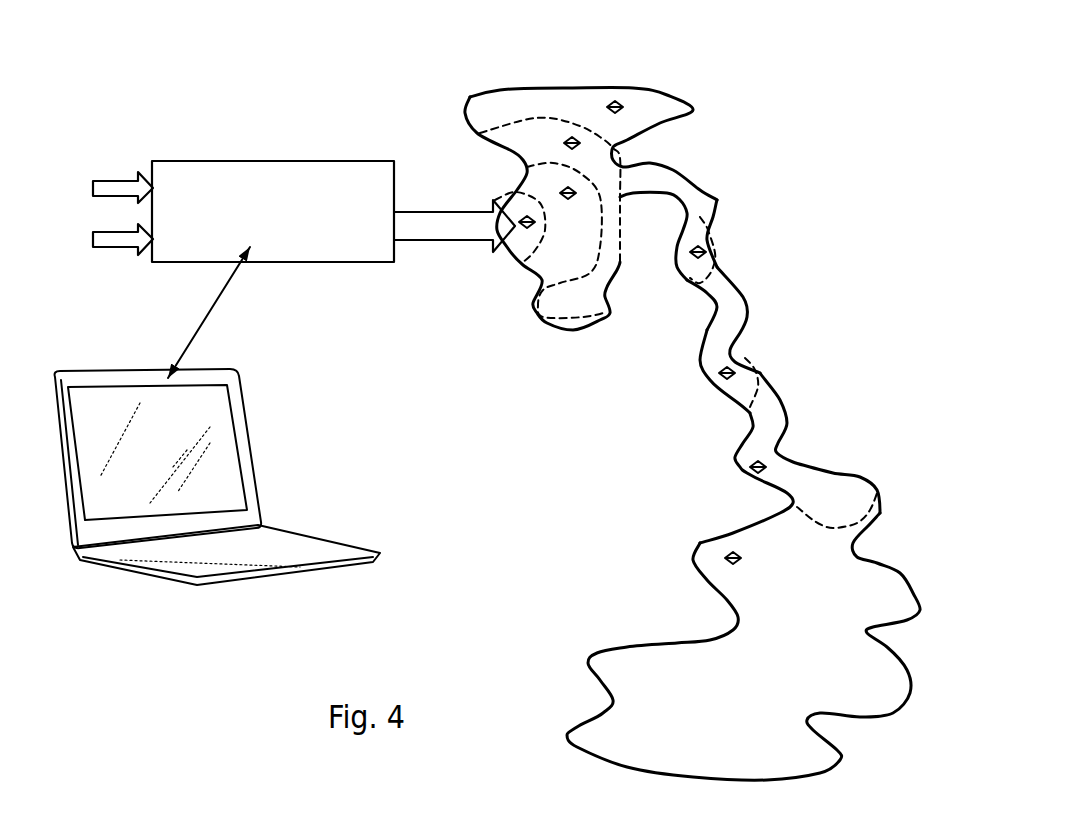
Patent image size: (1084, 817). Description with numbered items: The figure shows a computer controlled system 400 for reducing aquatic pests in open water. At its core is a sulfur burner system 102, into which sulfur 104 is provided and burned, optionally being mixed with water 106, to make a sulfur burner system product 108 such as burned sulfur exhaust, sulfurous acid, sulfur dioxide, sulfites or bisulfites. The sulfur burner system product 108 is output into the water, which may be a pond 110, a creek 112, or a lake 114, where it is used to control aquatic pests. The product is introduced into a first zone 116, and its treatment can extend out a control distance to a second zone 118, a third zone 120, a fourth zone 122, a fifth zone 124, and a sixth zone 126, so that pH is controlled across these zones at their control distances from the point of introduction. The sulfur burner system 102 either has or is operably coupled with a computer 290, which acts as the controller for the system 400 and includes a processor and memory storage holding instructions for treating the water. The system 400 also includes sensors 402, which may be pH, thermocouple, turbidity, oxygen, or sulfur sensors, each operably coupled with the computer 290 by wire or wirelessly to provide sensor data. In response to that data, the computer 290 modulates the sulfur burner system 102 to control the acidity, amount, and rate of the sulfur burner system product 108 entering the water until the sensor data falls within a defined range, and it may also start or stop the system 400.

The sulfur burner system 102 is at (206, 238).
The sulfur 104 is at (127, 254).
The water 106 is at (113, 175).
The sulfur burner system product 108 is at (423, 225).
The pond 110 is at (687, 112).
The creek 112 is at (749, 300).
The lake 114 is at (845, 582).
The first zone 116 is at (515, 249).
The second zone 118 is at (543, 268).
The third zone 120 is at (528, 146).
The fourth zone 122 is at (695, 193).
The fifth zone 124 is at (724, 335).
The sixth zone 126 is at (820, 479).
The computer 290 is at (250, 445).
The system 400 is at (283, 115).
The sensors 402 is at (528, 220).